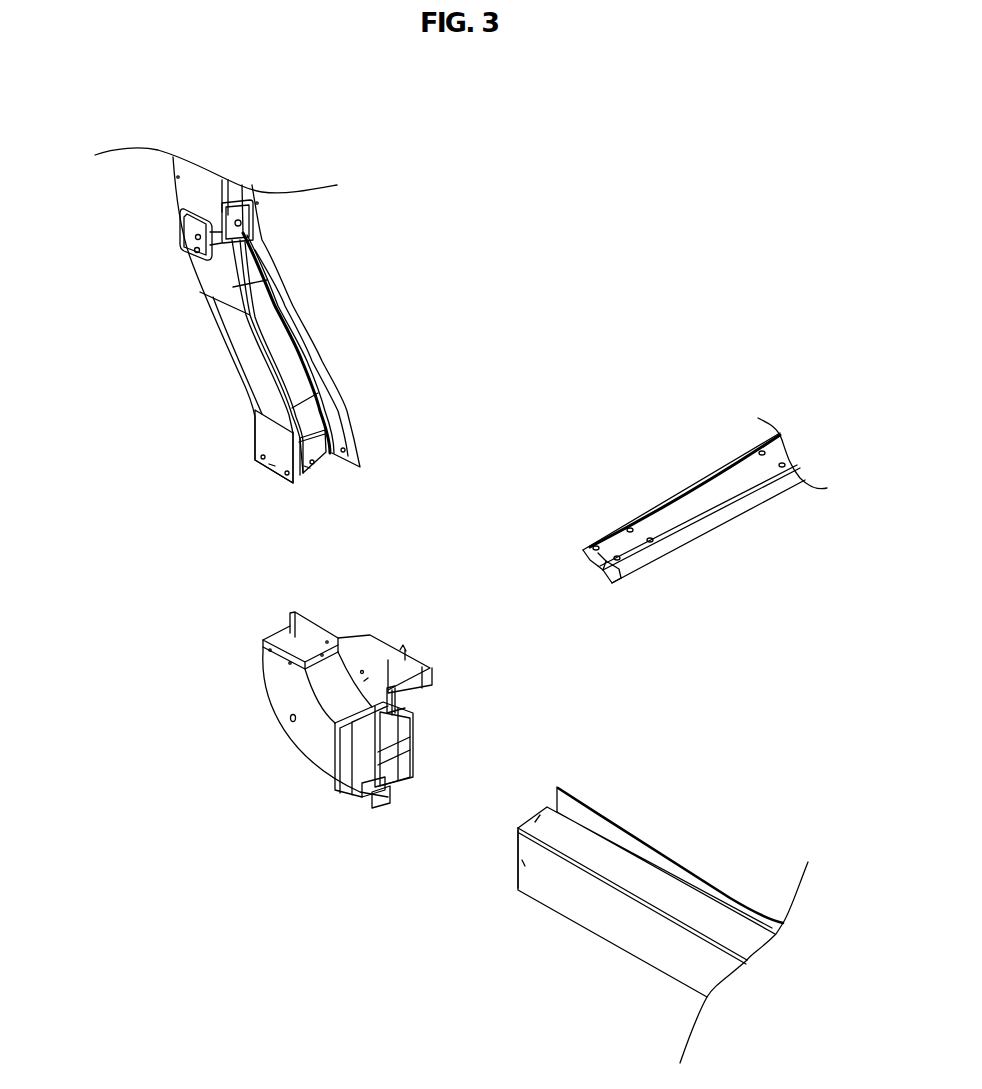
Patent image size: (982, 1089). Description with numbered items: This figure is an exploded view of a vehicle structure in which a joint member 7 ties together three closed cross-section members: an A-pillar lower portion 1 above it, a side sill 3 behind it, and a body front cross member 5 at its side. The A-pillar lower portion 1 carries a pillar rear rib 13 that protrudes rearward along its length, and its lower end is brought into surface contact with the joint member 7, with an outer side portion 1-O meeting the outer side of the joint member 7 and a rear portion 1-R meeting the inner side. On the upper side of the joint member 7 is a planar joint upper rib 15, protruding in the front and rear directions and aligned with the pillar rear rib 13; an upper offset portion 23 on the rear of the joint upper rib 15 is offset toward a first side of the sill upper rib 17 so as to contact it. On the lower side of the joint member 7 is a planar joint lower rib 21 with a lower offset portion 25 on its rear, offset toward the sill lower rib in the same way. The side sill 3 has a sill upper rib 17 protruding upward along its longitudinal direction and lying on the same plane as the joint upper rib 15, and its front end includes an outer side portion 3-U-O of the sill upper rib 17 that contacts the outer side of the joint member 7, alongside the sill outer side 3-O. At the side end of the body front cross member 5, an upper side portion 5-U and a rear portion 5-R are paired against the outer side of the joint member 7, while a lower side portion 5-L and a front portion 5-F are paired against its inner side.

The A-pillar lower portion 1 is at (245, 345).
The pillar rear rib 13 is at (287, 345).
The outer side portion 1-O is at (268, 470).
The rear portion 1-R is at (313, 470).
The body front cross member 5 is at (722, 488).
The front portion 5-F is at (592, 563).
The upper side portion 5-U is at (595, 568).
The lower side portion 5-L is at (603, 577).
The rear portion 5-R is at (622, 578).
The joint member 7 is at (300, 735).
The joint upper rib 15 is at (368, 678).
The upper offset portion 23 is at (398, 707).
The joint lower rib 21 is at (363, 792).
The lower offset portion 25 is at (377, 800).
The side sill 3 is at (637, 932).
The outer side portion 3-U-O is at (540, 814).
The side sill outer panel 3-O is at (518, 868).
The sill upper rib 17 is at (627, 840).